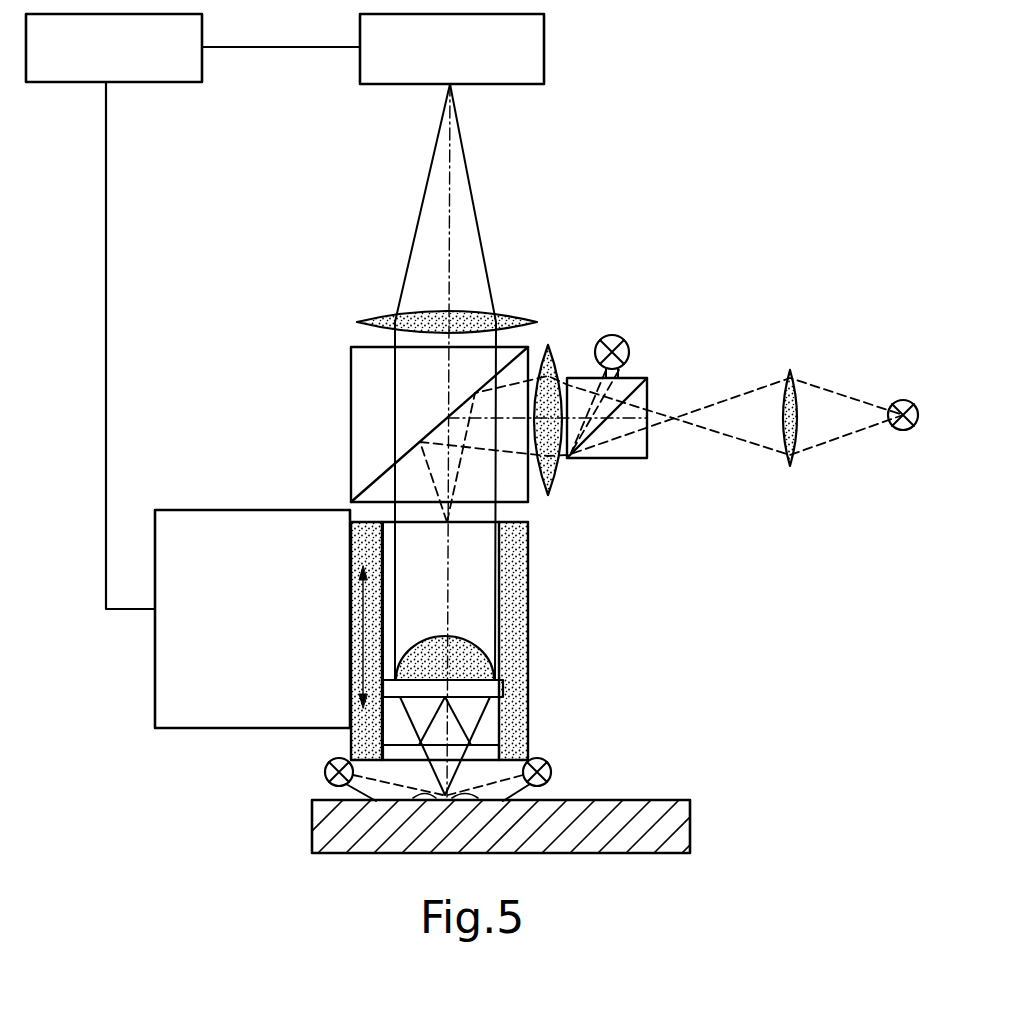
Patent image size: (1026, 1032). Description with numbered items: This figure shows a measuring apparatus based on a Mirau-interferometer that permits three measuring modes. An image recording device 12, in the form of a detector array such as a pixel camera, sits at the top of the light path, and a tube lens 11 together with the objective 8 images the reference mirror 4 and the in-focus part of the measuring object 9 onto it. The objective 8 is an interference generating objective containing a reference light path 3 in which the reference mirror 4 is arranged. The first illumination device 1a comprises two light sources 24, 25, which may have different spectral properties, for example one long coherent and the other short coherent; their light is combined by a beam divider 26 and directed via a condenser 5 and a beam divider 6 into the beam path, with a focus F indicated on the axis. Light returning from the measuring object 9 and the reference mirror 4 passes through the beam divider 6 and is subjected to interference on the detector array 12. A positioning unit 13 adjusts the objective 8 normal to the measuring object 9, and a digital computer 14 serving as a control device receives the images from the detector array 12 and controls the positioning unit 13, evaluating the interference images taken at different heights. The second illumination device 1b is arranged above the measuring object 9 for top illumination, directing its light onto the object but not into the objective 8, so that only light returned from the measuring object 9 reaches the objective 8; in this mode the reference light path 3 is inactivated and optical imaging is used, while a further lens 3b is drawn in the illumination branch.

The digital computer 14 is at (124, 64).
The image recording device 12 is at (466, 64).
The positioning unit 13 is at (272, 666).
The tube lens 11 is at (362, 320).
The beam divider 6 is at (367, 418).
The condenser 5 is at (551, 347).
The first illumination device 1a is at (823, 312).
The light source 24 is at (641, 348).
The light source 25 is at (894, 402).
The beam divider 26 is at (627, 459).
The lens 3b is at (795, 468).
The objective 8 is at (528, 627).
The focal point F is at (446, 524).
The reference light path 3 is at (455, 713).
The reference mirror 4 is at (503, 692).
The second illumination device 1b is at (563, 772).
The measuring object 9 is at (677, 827).